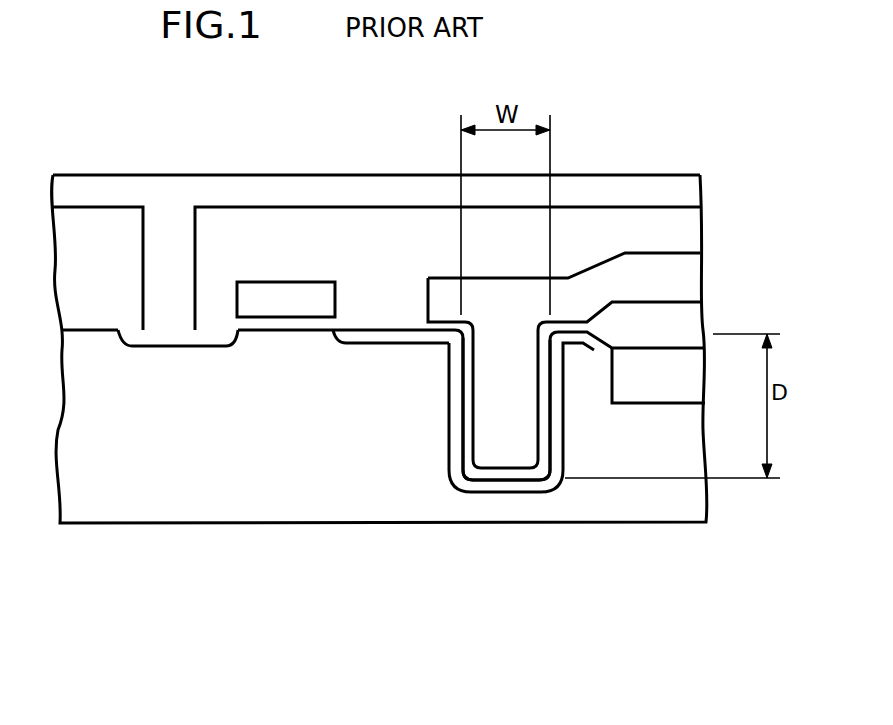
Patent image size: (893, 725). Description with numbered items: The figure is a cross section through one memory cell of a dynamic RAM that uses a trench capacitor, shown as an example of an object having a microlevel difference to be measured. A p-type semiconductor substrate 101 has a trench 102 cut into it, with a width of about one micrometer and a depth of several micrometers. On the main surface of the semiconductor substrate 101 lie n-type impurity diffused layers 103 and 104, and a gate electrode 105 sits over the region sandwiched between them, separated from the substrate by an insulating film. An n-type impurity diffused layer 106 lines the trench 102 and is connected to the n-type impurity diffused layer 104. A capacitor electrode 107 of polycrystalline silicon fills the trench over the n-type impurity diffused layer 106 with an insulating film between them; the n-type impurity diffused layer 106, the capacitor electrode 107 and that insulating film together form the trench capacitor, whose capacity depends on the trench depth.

The semiconductor substrate 101 is at (685, 503).
The trench 102 is at (557, 453).
The n-type impurity diffused layer 103 is at (207, 349).
The n-type impurity diffused layer 104 is at (340, 344).
The gate electrode 105 is at (293, 282).
The n-type impurity diffused layer 106 is at (448, 417).
The capacitor electrode 107 is at (498, 438).